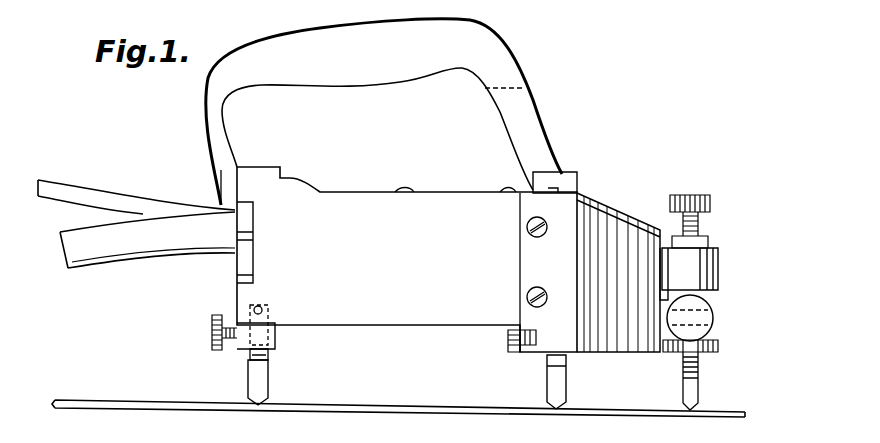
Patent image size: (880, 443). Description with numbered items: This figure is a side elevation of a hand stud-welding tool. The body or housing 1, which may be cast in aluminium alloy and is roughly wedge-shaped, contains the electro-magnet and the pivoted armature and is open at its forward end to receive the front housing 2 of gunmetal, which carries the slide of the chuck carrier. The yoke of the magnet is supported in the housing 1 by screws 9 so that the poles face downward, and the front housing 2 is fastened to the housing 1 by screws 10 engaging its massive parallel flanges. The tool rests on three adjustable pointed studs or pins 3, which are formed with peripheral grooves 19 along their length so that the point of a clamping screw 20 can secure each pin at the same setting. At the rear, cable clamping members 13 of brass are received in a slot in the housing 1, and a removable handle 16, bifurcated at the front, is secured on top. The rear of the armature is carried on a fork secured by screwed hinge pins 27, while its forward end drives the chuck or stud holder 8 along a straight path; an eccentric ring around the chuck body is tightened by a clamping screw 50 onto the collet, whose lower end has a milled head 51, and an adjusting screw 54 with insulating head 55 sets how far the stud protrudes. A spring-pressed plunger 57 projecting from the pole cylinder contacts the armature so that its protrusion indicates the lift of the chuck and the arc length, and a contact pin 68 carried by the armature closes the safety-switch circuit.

The body or housing 1 is at (313, 186).
The front housing 2 is at (600, 196).
The adjustable pointed studs or pins 3 is at (545, 385).
The chuck or stud holder 8 is at (712, 292).
The screws 9 is at (405, 192).
The screws 10 is at (530, 288).
The cable clamping members 13 is at (245, 265).
The removable handle 16 is at (362, 92).
The peripheral grooves 19 is at (272, 356).
The clamping screw 20 is at (212, 336).
The screwed hinge pins 27 is at (254, 310).
The clamping screw 50 is at (706, 332).
The head of collet 51 is at (712, 354).
The adjusting screw 54 is at (700, 226).
The insulating head 55 is at (690, 194).
The spring-pressed plunger 57 is at (563, 170).
The contact pin 68 is at (506, 344).